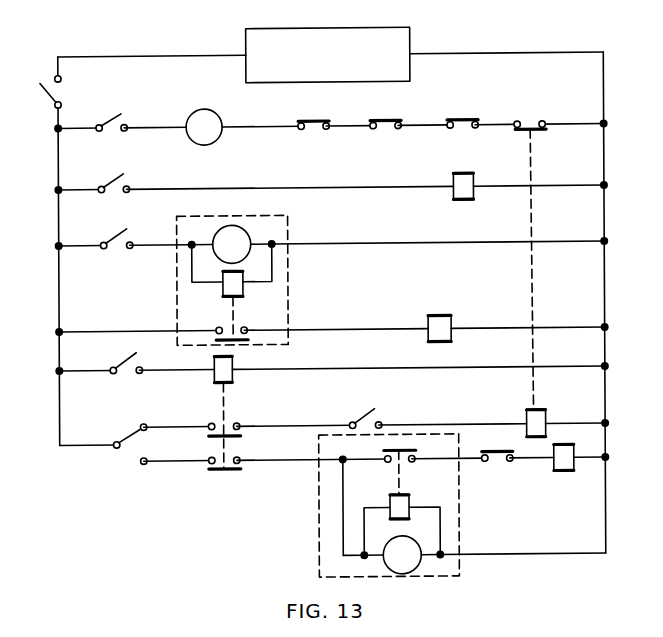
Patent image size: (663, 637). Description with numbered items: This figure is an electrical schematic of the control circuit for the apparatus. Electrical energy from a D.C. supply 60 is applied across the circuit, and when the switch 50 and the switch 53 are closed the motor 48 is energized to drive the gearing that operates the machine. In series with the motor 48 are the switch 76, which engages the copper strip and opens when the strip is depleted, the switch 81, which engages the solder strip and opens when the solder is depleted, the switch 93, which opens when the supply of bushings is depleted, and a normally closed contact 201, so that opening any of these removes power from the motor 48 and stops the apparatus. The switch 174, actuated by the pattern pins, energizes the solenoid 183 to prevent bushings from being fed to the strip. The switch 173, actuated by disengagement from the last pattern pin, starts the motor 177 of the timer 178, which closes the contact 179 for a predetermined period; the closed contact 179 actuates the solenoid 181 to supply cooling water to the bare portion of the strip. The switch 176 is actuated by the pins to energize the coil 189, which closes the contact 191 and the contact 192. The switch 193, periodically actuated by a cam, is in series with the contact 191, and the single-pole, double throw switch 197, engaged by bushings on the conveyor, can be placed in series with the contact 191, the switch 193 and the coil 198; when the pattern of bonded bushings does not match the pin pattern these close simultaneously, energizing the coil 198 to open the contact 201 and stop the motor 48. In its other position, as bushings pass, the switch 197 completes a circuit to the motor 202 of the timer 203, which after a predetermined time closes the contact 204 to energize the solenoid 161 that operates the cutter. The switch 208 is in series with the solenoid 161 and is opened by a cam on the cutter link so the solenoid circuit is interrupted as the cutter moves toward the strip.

The D.C. supply 60 is at (393, 29).
The switch 50 is at (41, 92).
The switch 53 is at (110, 118).
The motor 48 is at (190, 117).
The switch 76 is at (310, 120).
The switch 81 is at (380, 120).
The switch 93 is at (460, 120).
The normally closed contact 201 is at (524, 124).
The switch 174 is at (93, 176).
The solenoid 183 is at (456, 177).
The switch 173 is at (113, 236).
The motor 177 is at (219, 231).
The timer 178 is at (205, 290).
The contact 179 is at (243, 342).
The solenoid 181 is at (446, 323).
The switch 176 is at (124, 359).
The coil 189 is at (233, 372).
The single-pole, double throw switch 197 is at (127, 436).
The contact 191 is at (216, 433).
The switch 193 is at (368, 412).
The coil 198 is at (543, 420).
The contact 192 is at (218, 471).
The contact 204 is at (386, 449).
The switch 208 is at (496, 452).
The solenoid 161 is at (553, 468).
The timer 203 is at (365, 516).
The motor 202 is at (386, 570).